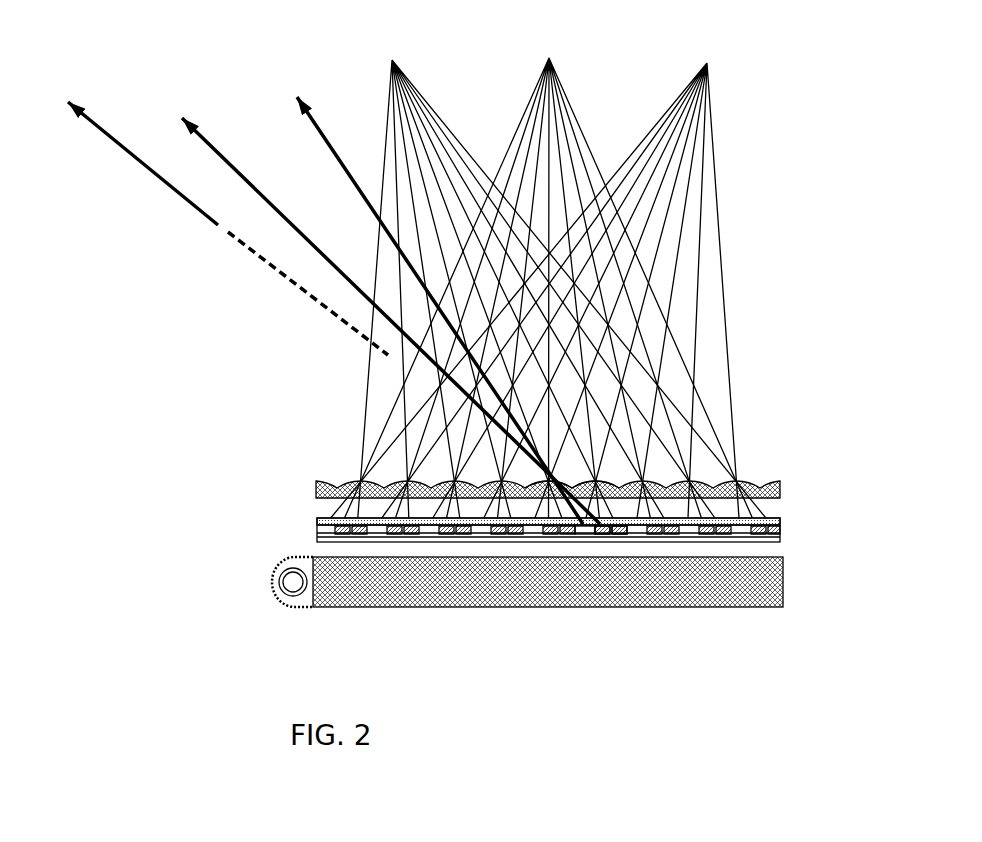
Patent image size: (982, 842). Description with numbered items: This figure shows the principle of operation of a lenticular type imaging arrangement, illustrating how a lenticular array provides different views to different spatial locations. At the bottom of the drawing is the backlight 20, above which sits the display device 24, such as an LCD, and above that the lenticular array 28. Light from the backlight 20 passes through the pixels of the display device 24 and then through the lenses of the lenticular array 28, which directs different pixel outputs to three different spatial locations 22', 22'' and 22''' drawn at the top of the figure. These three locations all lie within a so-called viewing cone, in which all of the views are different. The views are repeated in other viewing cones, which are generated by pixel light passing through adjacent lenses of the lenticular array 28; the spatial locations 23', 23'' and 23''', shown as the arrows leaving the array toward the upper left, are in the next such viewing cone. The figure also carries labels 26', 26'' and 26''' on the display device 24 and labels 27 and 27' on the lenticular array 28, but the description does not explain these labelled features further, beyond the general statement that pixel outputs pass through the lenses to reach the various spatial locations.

The backlight 20 is at (786, 587).
The spatial location 22' is at (535, 270).
The spatial location 22'' is at (549, 270).
The spatial location 22''' is at (561, 271).
The spatial location 23' is at (420, 283).
The spatial location 23'' is at (373, 283).
The spatial location 23''' is at (208, 199).
The display device 24 is at (783, 530).
The pixel (first view) 26' is at (608, 593).
The pixel (second view) 26'' is at (651, 593).
The pixel (third view) 26''' is at (691, 593).
The lens element 27 is at (694, 431).
The lens element 27' is at (407, 431).
The lenticular array 28 is at (786, 493).